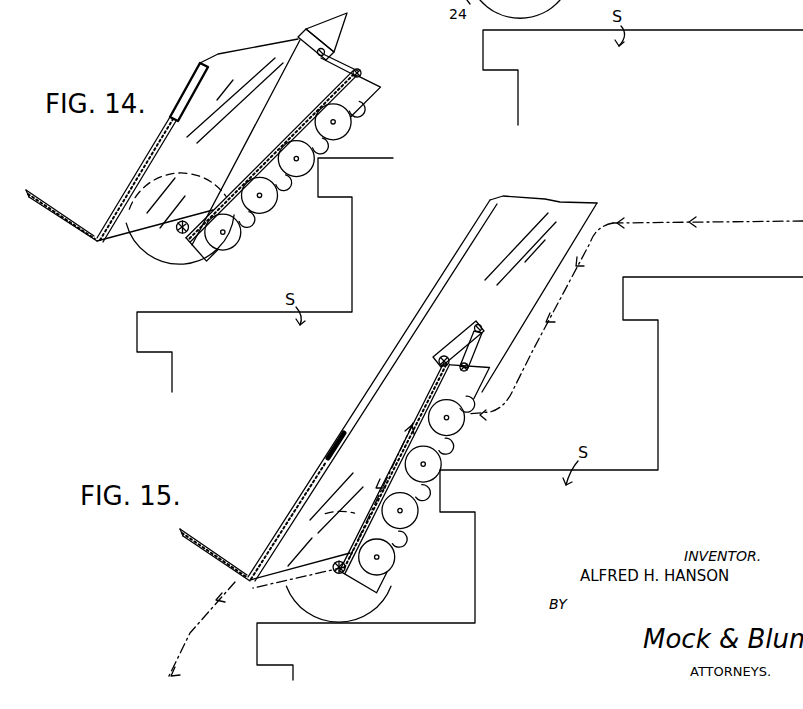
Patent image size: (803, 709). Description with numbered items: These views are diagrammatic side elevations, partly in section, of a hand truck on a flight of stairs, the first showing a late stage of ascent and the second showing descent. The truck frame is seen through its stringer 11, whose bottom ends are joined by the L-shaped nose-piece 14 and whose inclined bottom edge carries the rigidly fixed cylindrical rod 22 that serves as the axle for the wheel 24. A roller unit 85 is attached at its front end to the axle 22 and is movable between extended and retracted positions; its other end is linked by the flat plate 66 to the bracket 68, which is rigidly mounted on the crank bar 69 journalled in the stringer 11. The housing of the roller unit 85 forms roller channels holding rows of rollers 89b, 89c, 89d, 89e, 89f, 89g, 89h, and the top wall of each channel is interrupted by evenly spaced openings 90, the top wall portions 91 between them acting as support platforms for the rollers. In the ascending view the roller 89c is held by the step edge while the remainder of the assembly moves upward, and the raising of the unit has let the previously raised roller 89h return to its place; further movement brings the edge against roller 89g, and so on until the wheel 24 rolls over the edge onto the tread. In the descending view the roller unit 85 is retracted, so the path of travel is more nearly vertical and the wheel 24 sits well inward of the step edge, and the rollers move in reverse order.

In FIG. 15, the stringer 11 is at (557, 203).
In FIG. 14, the nose-piece 14 is at (62, 218).
In FIG. 15, the nose-piece 14 is at (190, 540).
In FIG. 14, the rod 22 is at (185, 221).
In FIG. 15, the rod 22 is at (337, 576).
In FIG. 14, the wheel 24 is at (155, 262).
In FIG. 15, the wheel 24 is at (297, 594).
In FIG. 14, the flat plate 66 is at (337, 64).
In FIG. 15, the flat plate 66 is at (481, 348).
In FIG. 14, the bracket 68 is at (305, 40).
In FIG. 15, the bracket 68 is at (452, 342).
In FIG. 15, the crank bar 69 is at (438, 357).
In FIG. 14, the roller unit 85 is at (372, 84).
In FIG. 15, the roller 89b is at (425, 501).
In FIG. 14, the roller 89c is at (319, 152).
In FIG. 14, the roller 89d is at (362, 112).
In FIG. 15, the roller 89e is at (453, 447).
In FIG. 15, the roller 89f is at (405, 532).
In FIG. 14, the roller 89g is at (302, 168).
In FIG. 15, the roller 89g is at (441, 475).
In FIG. 14, the roller 89h is at (344, 128).
In FIG. 15, the roller 89h is at (464, 426).
In FIG. 14, the opening 90 is at (290, 127).
In FIG. 15, the opening 90 is at (434, 393).
In FIG. 14, the top wall portion 91 is at (281, 141).
In FIG. 15, the top wall portion 91 is at (430, 404).